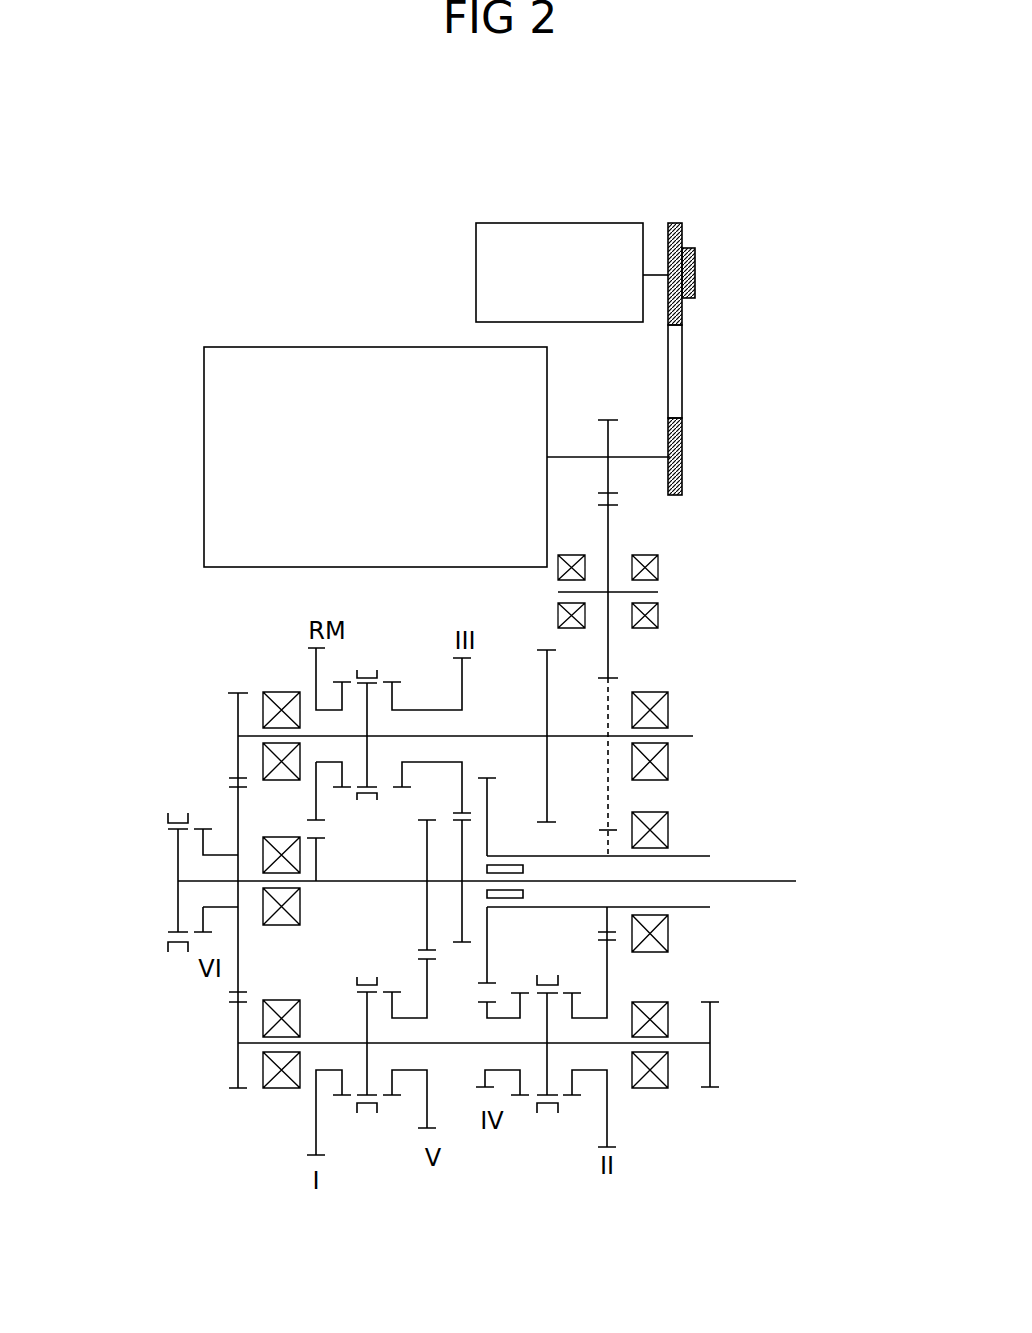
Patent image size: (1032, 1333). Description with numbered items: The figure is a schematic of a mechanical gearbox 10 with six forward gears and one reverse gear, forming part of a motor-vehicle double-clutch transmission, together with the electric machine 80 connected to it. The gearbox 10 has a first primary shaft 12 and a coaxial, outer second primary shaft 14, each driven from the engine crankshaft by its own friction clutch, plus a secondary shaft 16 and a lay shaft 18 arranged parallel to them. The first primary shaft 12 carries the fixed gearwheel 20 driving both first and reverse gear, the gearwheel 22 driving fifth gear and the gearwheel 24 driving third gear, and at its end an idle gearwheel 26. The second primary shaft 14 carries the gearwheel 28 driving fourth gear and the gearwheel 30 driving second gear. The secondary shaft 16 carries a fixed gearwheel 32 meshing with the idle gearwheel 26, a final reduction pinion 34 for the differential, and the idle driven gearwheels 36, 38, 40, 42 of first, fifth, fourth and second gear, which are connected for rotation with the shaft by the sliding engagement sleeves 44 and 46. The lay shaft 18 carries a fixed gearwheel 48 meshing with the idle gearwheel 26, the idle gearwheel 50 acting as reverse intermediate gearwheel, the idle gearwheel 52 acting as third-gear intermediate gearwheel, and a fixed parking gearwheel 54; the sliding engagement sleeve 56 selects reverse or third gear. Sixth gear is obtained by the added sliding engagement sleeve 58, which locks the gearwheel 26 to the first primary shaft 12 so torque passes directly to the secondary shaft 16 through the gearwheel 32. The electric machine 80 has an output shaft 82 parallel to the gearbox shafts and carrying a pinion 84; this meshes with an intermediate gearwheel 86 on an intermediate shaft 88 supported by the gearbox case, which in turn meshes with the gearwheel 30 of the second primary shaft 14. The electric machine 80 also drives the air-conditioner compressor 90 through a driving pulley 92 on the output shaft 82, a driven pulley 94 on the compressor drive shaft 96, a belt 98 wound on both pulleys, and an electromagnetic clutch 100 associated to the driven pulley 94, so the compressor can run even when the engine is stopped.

The mechanical gearbox 10 is at (178, 692).
The first primary shaft 12 is at (796, 881).
The second primary shaft 14 is at (710, 856).
The secondary shaft 16 is at (683, 1045).
The lay shaft 18 is at (693, 736).
The gearwheel 20 is at (316, 838).
The gearwheel 22 is at (427, 820).
The gearwheel 24 is at (462, 942).
The idle gearwheel 26 is at (238, 820).
The gearwheel 28 is at (487, 778).
The gearwheel 30 is at (608, 830).
The fixed gearwheel 32 is at (238, 1088).
The final reduction pinion 34 is at (710, 1087).
The gearwheel 36 is at (316, 1155).
The gearwheel 38 is at (427, 1128).
The gearwheel 40 is at (485, 1087).
The gearwheel 42 is at (607, 1147).
The sliding engagement sleeve 44 is at (375, 1108).
The sliding engagement sleeve 46 is at (553, 1110).
The fixed gearwheel 48 is at (238, 692).
The gearwheel 50 is at (316, 670).
The gearwheel 52 is at (462, 658).
The parking gearwheel 54 is at (547, 650).
The sliding engagement sleeve 56 is at (377, 672).
The sliding engagement sleeve 58 is at (178, 818).
The electric machine 80 is at (268, 347).
The output shaft 82 is at (638, 460).
The pinion 84 is at (608, 420).
The intermediate gearwheel 86 is at (612, 678).
The intermediate shaft 88 is at (658, 592).
The compressor 90 is at (522, 223).
The driving pulley 92 is at (682, 478).
The driven pulley 94 is at (670, 223).
The drive shaft 96 is at (668, 275).
The belt 98 is at (682, 382).
The electromagnetic clutch 100 is at (695, 273).